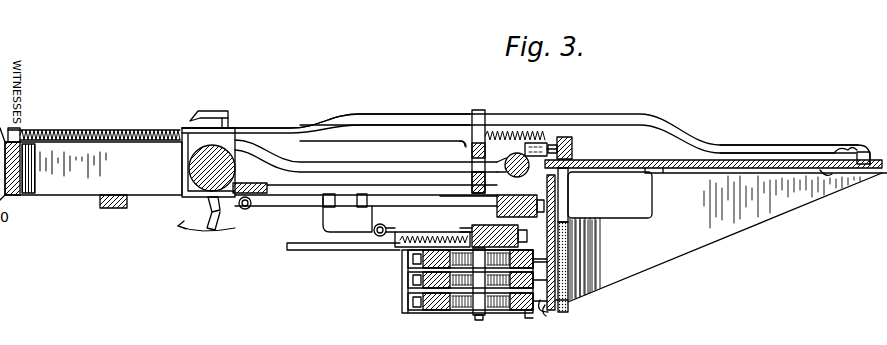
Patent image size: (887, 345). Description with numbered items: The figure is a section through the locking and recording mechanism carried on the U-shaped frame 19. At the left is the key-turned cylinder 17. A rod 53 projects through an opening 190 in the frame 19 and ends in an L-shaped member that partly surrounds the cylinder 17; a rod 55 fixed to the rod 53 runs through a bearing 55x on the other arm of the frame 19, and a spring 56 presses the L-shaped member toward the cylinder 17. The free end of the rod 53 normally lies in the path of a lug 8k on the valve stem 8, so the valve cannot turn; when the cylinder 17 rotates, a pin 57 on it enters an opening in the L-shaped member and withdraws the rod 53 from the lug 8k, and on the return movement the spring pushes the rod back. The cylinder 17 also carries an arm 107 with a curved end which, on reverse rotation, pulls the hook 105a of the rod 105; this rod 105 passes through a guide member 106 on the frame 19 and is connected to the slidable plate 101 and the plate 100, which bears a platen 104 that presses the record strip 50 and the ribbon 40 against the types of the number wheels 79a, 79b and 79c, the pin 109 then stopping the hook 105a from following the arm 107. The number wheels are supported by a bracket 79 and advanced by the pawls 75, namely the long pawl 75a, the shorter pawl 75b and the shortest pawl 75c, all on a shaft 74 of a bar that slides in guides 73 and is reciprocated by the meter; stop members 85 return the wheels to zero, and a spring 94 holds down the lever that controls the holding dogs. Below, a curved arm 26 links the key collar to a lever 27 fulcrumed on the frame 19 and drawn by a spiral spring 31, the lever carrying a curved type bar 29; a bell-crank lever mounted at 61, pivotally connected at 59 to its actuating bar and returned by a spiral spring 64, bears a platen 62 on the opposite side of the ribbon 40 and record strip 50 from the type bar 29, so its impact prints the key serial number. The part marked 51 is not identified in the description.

The hook 105a is at (214, 95).
The pin 109 is at (228, 120).
The cylinder 17 is at (217, 162).
The bearing 55x is at (45, 111).
The rod 55 is at (82, 128).
The spring 56 is at (140, 128).
The curved bar 51 is at (253, 150).
The rod 53 is at (356, 160).
The valve stem 8 is at (516, 171).
The guide member 106 is at (479, 110).
The lug 8k is at (519, 153).
The mounting of bell-crank lever 61 is at (572, 151).
The spiral spring 64 is at (562, 136).
The pin 57 is at (722, 160).
The rod 105 is at (796, 146).
The plate 100 is at (735, 229).
The slidable plate 101 is at (832, 185).
The platen 104 is at (570, 297).
The pivotal connection 59 is at (730, 338).
The record strip 50 is at (563, 176).
The platen 62 is at (575, 183).
The ribbon 40 is at (560, 238).
The curved arm 26 is at (262, 197).
The lever 27 is at (388, 190).
The opening in frame member 190 is at (463, 187).
The type bar 29 is at (510, 196).
The frame 19 is at (327, 188).
The arm 107 is at (205, 206).
The spiral spring 31 is at (248, 210).
The spring 94 is at (388, 233).
The guides 73 is at (440, 232).
The bracket 79 is at (460, 146).
The stop members 85 is at (495, 227).
The pawls 75 is at (402, 256).
The shaft 74 is at (416, 300).
The pawl 75c is at (406, 270).
The pawl 75b is at (408, 290).
The pawl 75a is at (460, 312).
The number wheel 79a is at (530, 313).
The number wheel 79b is at (546, 312).
The number wheel 79c is at (548, 262).